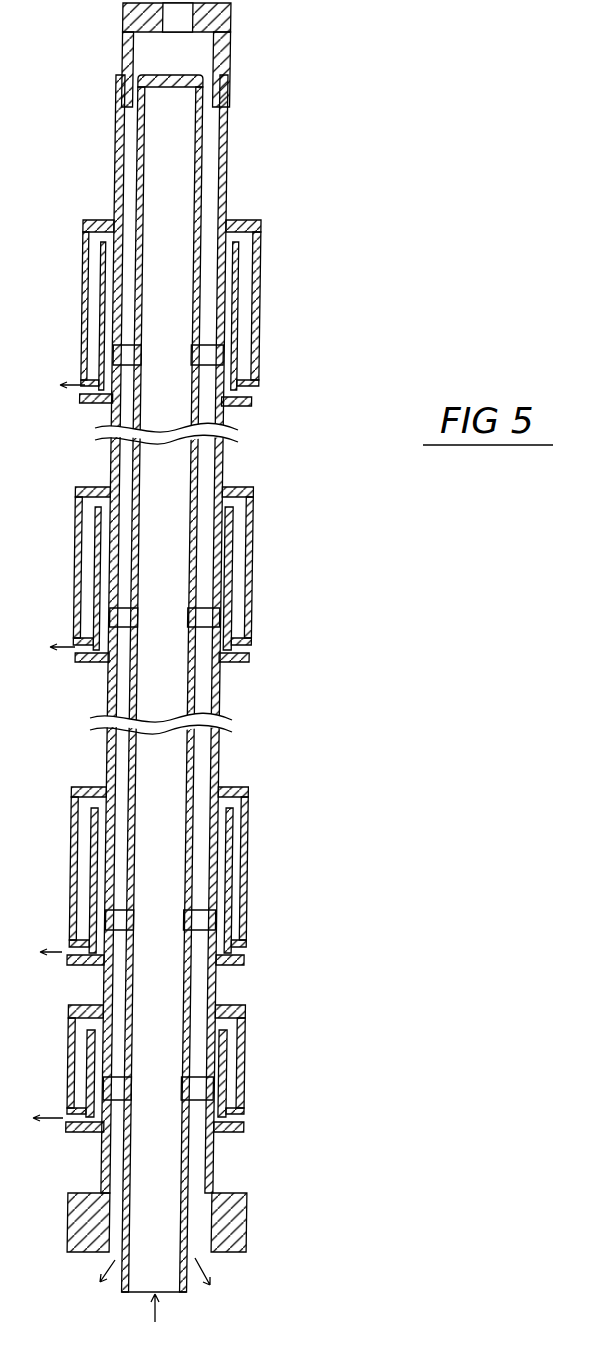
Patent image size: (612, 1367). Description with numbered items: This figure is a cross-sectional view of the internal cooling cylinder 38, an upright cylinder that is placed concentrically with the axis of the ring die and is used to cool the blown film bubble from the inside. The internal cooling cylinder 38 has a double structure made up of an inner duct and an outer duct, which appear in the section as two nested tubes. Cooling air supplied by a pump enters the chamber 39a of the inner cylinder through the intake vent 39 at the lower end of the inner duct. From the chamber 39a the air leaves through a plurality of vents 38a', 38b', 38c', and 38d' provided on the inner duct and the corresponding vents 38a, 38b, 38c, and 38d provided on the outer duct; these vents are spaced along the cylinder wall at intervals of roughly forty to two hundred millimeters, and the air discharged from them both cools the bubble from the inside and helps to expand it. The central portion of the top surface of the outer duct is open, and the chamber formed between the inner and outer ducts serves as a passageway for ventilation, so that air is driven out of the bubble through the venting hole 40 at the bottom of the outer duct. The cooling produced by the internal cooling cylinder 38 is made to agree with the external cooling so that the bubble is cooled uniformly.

The internal cooling cylinder 38 is at (227, 90).
The intake vent 39 is at (170, 1295).
The chamber of the inner cylinder 39a is at (170, 743).
The venting hole 40 is at (203, 1258).
The vent 38a is at (191, 1075).
The vent 38a' is at (223, 1082).
The vent 38b is at (197, 883).
The vent 38b' is at (222, 906).
The vent 38c is at (200, 579).
The vent 38c' is at (228, 610).
The vent 38d is at (208, 316).
The vent 38d' is at (230, 341).